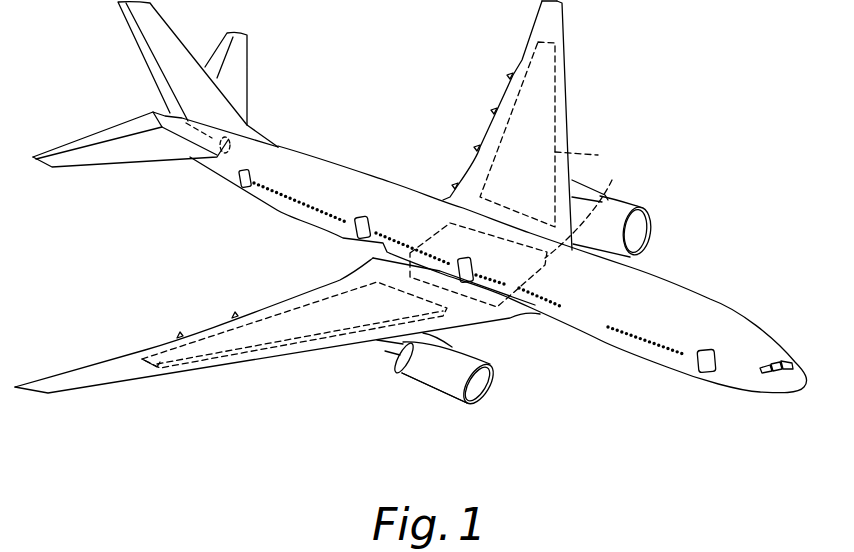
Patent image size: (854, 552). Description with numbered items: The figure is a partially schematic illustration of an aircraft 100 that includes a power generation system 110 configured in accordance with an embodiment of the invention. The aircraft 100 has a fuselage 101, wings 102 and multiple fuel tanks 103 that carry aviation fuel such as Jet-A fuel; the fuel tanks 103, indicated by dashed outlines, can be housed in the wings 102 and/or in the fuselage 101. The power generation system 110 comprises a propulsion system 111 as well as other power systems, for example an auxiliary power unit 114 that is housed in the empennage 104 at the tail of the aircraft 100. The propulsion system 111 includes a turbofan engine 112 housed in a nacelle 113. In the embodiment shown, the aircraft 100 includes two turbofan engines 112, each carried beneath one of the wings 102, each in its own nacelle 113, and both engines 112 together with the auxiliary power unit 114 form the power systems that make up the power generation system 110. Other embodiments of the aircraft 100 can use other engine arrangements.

The aircraft 100 is at (665, 427).
The fuselage 101 is at (663, 287).
The wings 102 is at (562, 105).
The fuel tanks 103 is at (598, 155).
The empennage 104 is at (285, 112).
The power generation system 110 is at (295, 273).
The propulsion system 111 is at (387, 398).
The turbofan engine 112 is at (489, 389).
The nacelle 113 is at (442, 392).
The auxiliary power unit 114 is at (186, 123).